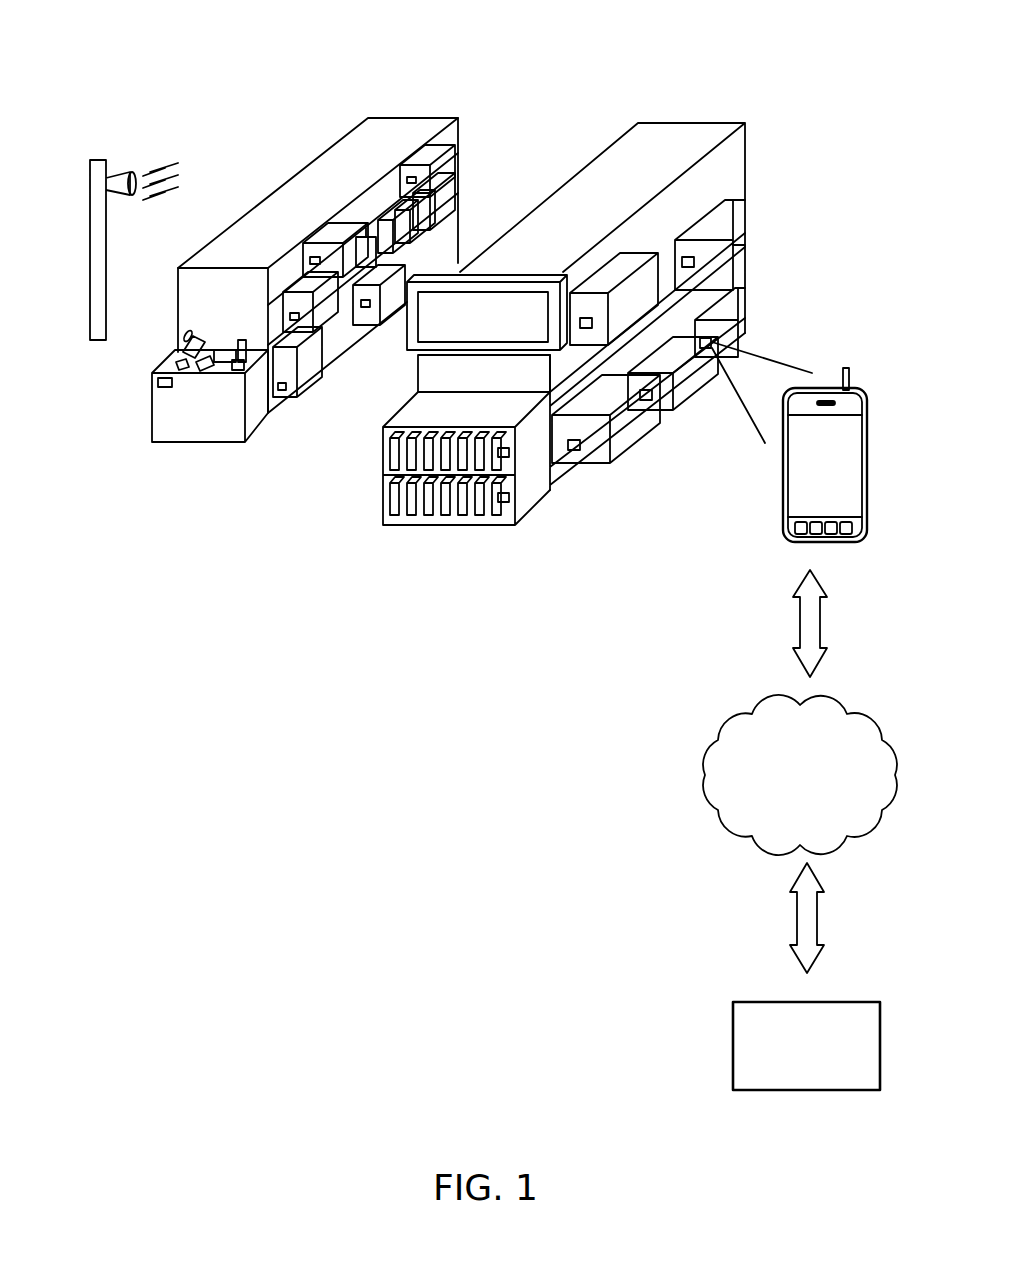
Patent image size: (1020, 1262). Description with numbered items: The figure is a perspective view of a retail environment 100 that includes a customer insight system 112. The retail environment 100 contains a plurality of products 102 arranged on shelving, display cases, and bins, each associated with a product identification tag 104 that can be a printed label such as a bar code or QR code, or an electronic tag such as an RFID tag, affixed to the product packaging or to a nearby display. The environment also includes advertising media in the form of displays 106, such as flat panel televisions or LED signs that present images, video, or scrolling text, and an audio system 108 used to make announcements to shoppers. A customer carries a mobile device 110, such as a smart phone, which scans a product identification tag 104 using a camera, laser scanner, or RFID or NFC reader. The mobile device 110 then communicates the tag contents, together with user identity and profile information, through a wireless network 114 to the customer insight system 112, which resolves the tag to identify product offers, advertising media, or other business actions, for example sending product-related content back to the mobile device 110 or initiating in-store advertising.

The retail environment 100 is at (650, 52).
The products 102 is at (440, 199).
The product identification tags 104 is at (412, 181).
The displays 106 is at (366, 240).
The audio system 108 is at (135, 156).
The mobile device 110 is at (824, 370).
The customer insight system 112 is at (758, 1002).
The network 114 is at (742, 708).